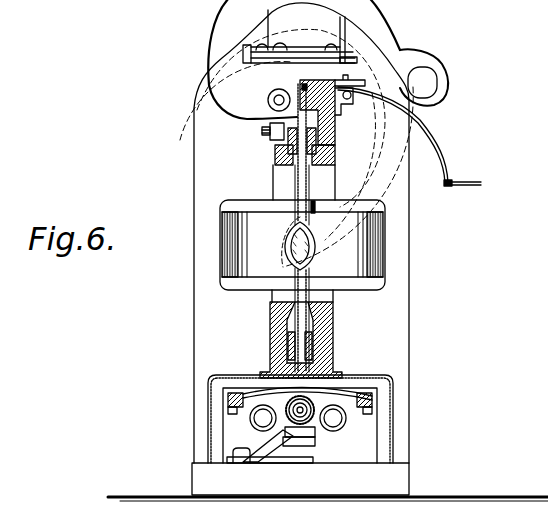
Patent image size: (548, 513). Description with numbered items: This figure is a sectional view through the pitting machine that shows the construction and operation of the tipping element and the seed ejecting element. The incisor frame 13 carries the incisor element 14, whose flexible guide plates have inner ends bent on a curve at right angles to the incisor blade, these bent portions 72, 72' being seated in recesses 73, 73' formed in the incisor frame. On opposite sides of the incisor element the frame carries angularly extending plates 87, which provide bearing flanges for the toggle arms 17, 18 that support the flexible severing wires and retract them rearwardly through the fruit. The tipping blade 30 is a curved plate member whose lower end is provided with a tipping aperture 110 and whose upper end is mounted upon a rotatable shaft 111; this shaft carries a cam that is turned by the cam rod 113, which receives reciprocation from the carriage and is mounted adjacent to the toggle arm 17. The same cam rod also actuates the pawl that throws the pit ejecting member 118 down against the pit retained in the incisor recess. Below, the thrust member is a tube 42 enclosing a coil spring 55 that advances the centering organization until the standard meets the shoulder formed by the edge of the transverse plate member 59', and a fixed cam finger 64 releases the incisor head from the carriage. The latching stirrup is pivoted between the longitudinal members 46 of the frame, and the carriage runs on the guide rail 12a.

The incisor frame 13 is at (187, 148).
The tipping blade 30 is at (220, 28).
The tipping aperture 110 is at (431, 66).
The pit ejecting member 118 is at (481, 184).
The cam rod 113 is at (300, 88).
The rotatable shaft 111 is at (266, 100).
The toggle arm 17 is at (275, 138).
The angularly extending plate 87 is at (275, 152).
The incisor element 14 is at (286, 185).
The bent portion of guide plate 72 is at (329, 245).
The bent portion of guide plate 72' is at (261, 244).
The recess 73 is at (402, 233).
The recess 73' is at (199, 231).
The toggle arm 18 is at (290, 340).
The longitudinal member 46 is at (210, 428).
The guide rail 12a is at (228, 403).
The transverse plate member 59' is at (307, 378).
The tube 42 is at (290, 412).
The fixed cam finger 64 is at (318, 446).
The coil spring 55 is at (268, 433).